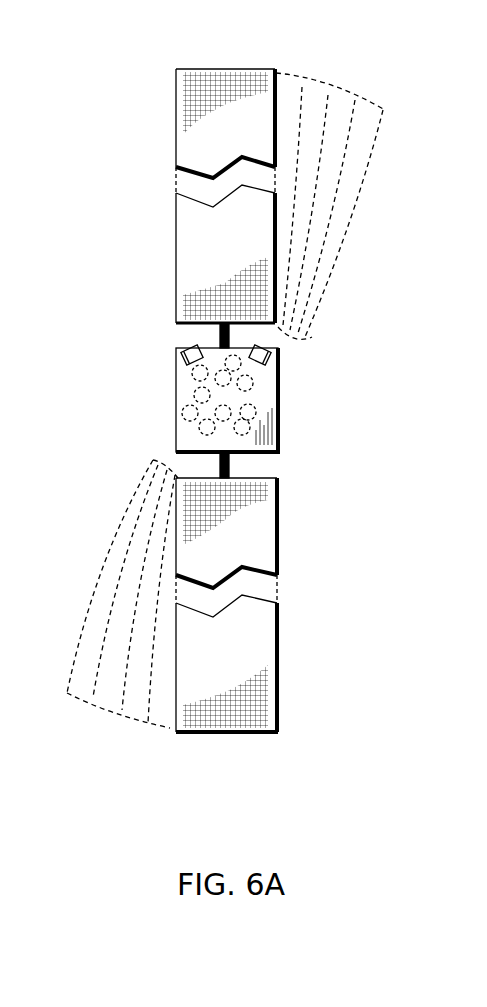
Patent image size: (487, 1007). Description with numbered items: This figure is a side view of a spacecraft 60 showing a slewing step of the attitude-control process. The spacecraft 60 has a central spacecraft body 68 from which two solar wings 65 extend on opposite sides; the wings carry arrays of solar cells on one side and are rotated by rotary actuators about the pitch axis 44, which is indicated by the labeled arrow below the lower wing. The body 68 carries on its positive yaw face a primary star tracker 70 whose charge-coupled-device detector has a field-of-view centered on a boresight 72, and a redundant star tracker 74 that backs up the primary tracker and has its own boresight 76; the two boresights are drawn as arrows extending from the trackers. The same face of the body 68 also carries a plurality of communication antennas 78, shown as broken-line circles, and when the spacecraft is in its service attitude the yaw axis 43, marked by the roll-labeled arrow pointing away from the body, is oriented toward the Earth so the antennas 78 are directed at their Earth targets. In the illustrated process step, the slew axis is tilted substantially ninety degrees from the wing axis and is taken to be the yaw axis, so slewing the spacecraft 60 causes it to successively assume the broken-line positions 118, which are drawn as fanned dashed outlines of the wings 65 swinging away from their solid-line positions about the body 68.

The solar wing 65 is at (176, 90).
The broken-line positions 118 is at (380, 120).
The spacecraft 60 is at (134, 298).
The boresight 72 is at (163, 196).
The boresight 76 is at (288, 196).
The primary star tracker 70 is at (181, 347).
The redundant star tracker 74 is at (287, 343).
The communication antennas 78 is at (279, 381).
The yaw axis 43 is at (168, 400).
The spacecraft body 68 is at (281, 459).
The pitch axis 44 is at (227, 740).